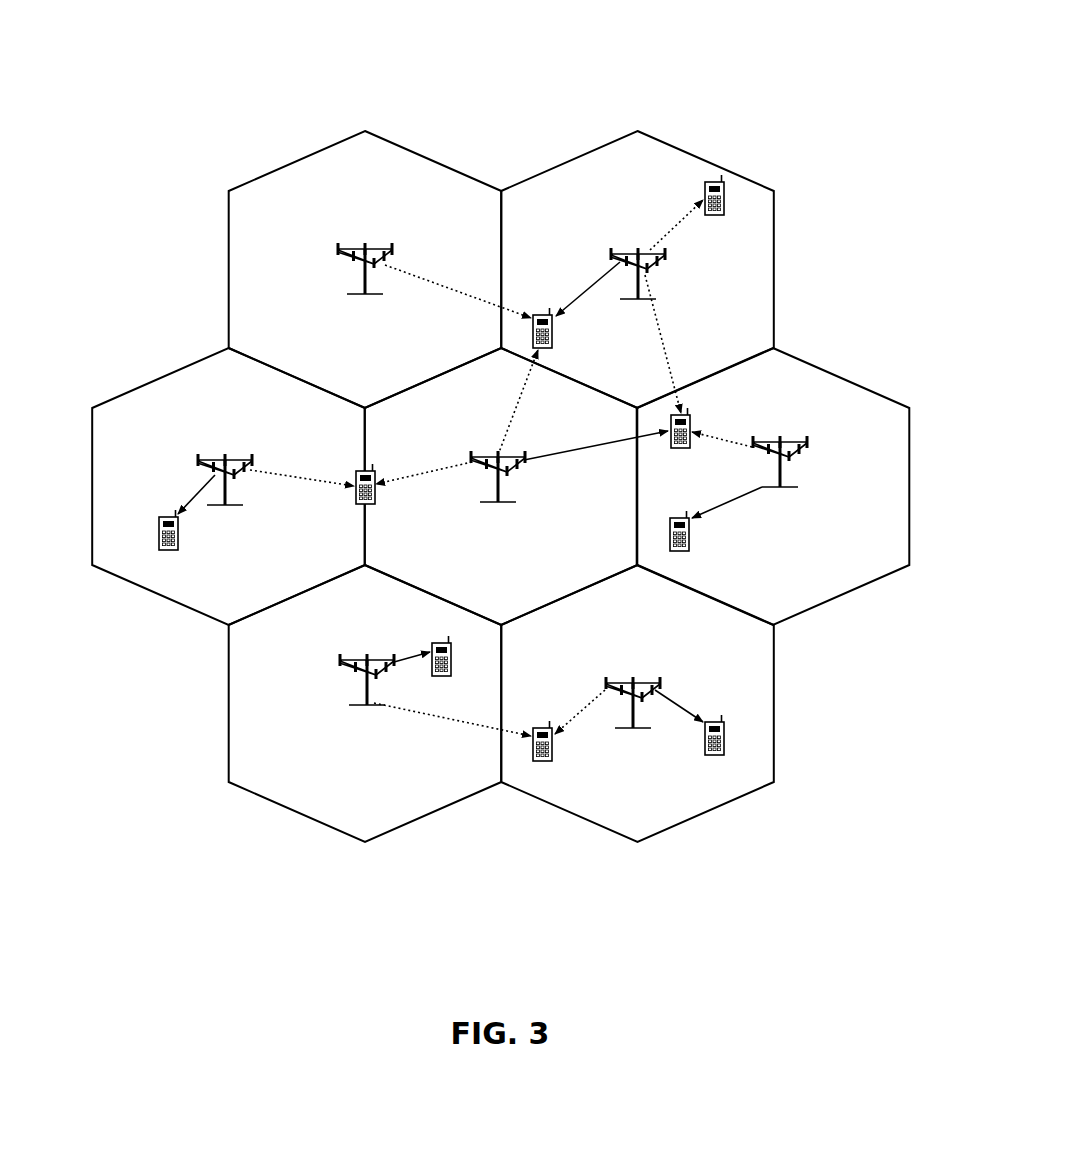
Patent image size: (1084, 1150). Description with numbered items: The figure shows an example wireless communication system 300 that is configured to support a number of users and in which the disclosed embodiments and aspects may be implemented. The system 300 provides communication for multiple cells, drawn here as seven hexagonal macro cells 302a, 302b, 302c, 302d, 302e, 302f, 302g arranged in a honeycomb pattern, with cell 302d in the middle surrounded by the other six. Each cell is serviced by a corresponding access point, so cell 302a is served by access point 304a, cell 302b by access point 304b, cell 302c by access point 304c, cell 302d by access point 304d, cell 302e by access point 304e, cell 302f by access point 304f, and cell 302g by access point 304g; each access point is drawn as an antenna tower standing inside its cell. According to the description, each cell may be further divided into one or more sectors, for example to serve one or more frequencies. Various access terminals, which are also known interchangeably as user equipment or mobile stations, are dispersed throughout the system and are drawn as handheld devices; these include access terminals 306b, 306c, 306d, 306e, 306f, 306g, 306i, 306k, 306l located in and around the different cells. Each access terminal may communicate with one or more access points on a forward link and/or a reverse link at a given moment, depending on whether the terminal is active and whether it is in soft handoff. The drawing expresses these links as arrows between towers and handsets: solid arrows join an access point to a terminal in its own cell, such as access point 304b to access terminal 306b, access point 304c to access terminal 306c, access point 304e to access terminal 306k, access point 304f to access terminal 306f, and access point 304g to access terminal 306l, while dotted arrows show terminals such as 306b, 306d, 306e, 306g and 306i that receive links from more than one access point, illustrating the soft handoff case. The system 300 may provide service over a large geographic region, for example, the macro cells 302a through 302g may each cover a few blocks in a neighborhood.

The wireless communication system 300 is at (592, 47).
The macro cell 302a is at (319, 155).
The macro cell 302b is at (689, 156).
The macro cell 302c is at (161, 377).
The macro cell 302d is at (501, 486).
The macro cell 302e is at (856, 364).
The macro cell 302f is at (227, 708).
The macro cell 302g is at (776, 708).
The access point 304a is at (337, 249).
The access point 304b is at (612, 250).
The access point 304c is at (208, 456).
The access point 304d is at (469, 455).
The access point 304e is at (810, 445).
The access point 304f is at (338, 657).
The access point 304g is at (605, 677).
The access terminal 306b is at (538, 312).
The access terminal 306c is at (157, 533).
The access terminal 306d is at (354, 476).
The access terminal 306e is at (692, 426).
The access terminal 306f is at (435, 640).
The access terminal 306g is at (538, 725).
The access terminal 306i is at (703, 190).
The access terminal 306k is at (672, 515).
The access terminal 306l is at (710, 719).